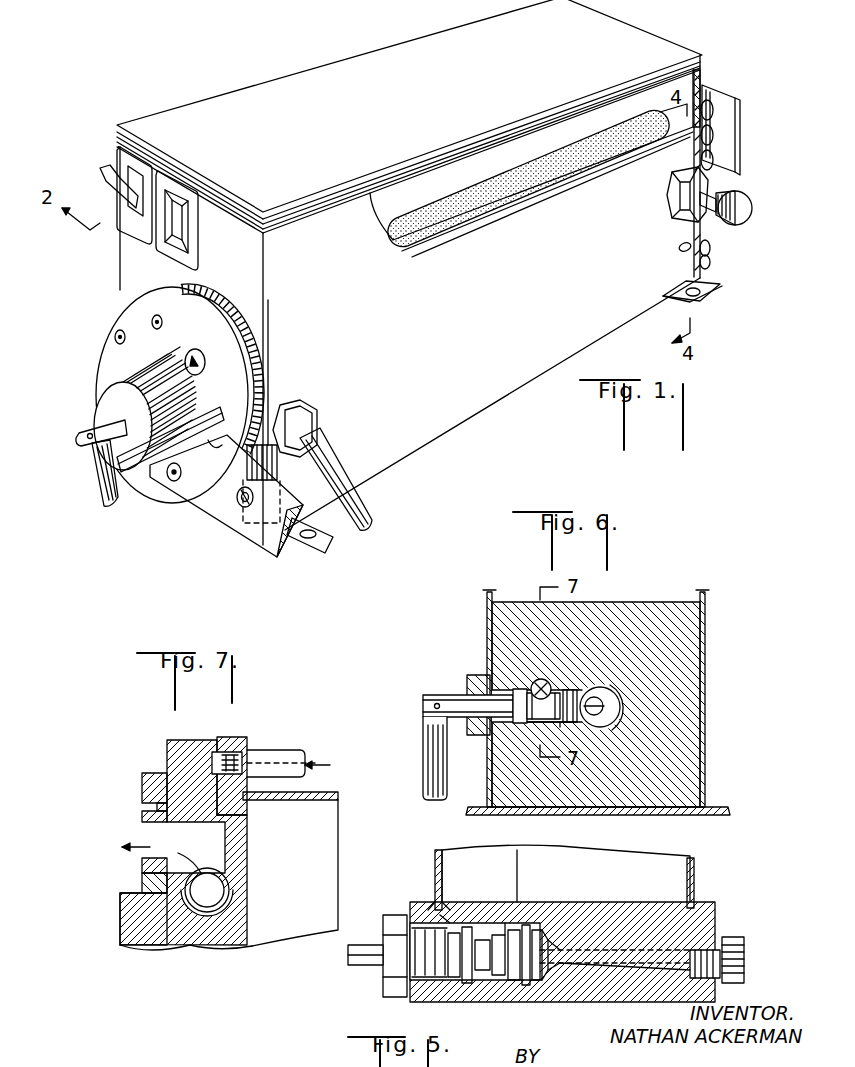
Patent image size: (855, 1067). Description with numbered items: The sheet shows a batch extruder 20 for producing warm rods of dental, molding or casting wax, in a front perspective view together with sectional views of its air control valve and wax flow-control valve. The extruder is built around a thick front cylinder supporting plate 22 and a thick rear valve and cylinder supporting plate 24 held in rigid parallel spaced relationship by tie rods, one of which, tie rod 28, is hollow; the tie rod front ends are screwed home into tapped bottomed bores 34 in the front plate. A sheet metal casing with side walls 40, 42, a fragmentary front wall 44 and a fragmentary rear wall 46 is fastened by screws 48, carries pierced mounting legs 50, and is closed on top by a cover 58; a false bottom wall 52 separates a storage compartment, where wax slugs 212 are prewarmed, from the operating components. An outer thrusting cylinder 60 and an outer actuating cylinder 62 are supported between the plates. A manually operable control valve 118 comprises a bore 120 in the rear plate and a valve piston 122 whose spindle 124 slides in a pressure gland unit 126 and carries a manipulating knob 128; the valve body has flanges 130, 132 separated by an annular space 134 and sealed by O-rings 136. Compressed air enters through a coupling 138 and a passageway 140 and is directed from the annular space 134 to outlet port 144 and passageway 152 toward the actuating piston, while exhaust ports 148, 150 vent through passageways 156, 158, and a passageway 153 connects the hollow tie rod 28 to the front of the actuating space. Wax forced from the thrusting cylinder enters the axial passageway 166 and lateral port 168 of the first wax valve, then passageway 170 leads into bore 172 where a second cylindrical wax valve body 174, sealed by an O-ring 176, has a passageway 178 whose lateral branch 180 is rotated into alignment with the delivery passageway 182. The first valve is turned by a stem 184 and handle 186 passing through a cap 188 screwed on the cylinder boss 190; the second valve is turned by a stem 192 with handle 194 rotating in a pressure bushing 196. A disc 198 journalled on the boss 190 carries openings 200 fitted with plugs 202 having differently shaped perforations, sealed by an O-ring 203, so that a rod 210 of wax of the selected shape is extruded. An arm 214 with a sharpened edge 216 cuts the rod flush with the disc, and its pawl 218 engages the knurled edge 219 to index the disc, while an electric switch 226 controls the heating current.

In FIG. 1, the batch extruder 20 is at (214, 68).
In FIG. 6, the front cylinder supporting plate 22 is at (655, 602).
In FIG. 7, the front cylinder supporting plate 22 is at (196, 948).
In FIG. 5, the rear valve and cylinder supporting plate 24 is at (712, 900).
In FIG. 7, the tie rod 28 is at (290, 748).
In FIG. 7, the tapped bottomed bore 34 is at (232, 742).
In FIG. 1, the side wall 40 is at (452, 421).
In FIG. 6, the side wall 40 is at (487, 619).
In FIG. 6, the side wall 42 is at (706, 646).
In FIG. 1, the fragmentary front wall 44 is at (263, 302).
In FIG. 1, the fragmentary rear wall 46 is at (708, 80).
In FIG. 1, the screws 48 is at (680, 250).
In FIG. 1, the mounting legs 50 is at (305, 546).
In FIG. 1, the false bottom wall 52 is at (508, 152).
In FIG. 1, the sheet metal cover 58 is at (402, 50).
In FIG. 5, the outer thrusting cylinder 60 is at (615, 866).
In FIG. 7, the outer actuating cylinder 62 is at (283, 800).
In FIG. 5, the outer actuating cylinder 62 is at (434, 863).
In FIG. 1, the control valve 118 is at (666, 204).
In FIG. 5, the control valve 118 is at (365, 966).
In FIG. 5, the bore 120 is at (500, 985).
In FIG. 5, the valve piston 122 is at (492, 925).
In FIG. 1, the spindle 124 is at (735, 188).
In FIG. 5, the spindle 124 is at (438, 985).
In FIG. 1, the pressure gland unit 126 is at (670, 191).
In FIG. 5, the pressure gland unit 126 is at (395, 913).
In FIG. 1, the manipulating knob 128 is at (738, 228).
In FIG. 5, the flange 130 is at (480, 985).
In FIG. 5, the flange 132 is at (536, 985).
In FIG. 5, the annular space 134 is at (545, 938).
In FIG. 5, the sealing O-ring 136 is at (528, 985).
In FIG. 5, the coupling 138 is at (740, 936).
In FIG. 5, the passageway 140 is at (646, 1002).
In FIG. 5, the outlet port 144 is at (508, 922).
In FIG. 5, the exhaust port 148 is at (580, 940).
In FIG. 5, the exhaust port 150 is at (452, 920).
In FIG. 5, the passageway 152 is at (548, 925).
In FIG. 7, the passageway 153 is at (218, 768).
In FIG. 5, the passageway 156 is at (560, 985).
In FIG. 5, the passageway 158 is at (462, 985).
In FIG. 6, the passageway 166 is at (612, 690).
In FIG. 6, the port 168 is at (588, 728).
In FIG. 6, the passageway 170 is at (590, 690).
In FIG. 6, the bore 172 is at (552, 723).
In FIG. 6, the second cylindrical wax valve body 174 is at (533, 723).
In FIG. 7, the second cylindrical wax valve body 174 is at (233, 901).
In FIG. 6, the O-ring 176 is at (535, 692).
In FIG. 6, the passageway 178 is at (572, 690).
In FIG. 7, the passageway 178 is at (222, 905).
In FIG. 6, the lateral branch 180 is at (543, 680).
In FIG. 7, the lateral branch 180 is at (225, 885).
In FIG. 7, the delivery passageway 182 is at (248, 850).
In FIG. 1, the stem 184 is at (98, 428).
In FIG. 1, the handle 186 is at (110, 500).
In FIG. 1, the cap 188 is at (100, 383).
In FIG. 7, the cylinder boss 190 is at (133, 946).
In FIG. 1, the stem 192 is at (316, 443).
In FIG. 6, the stem 192 is at (450, 695).
In FIG. 1, the handle 194 is at (368, 504).
In FIG. 6, the handle 194 is at (430, 789).
In FIG. 6, the pressure bushing 196 is at (478, 675).
In FIG. 1, the disc 198 is at (110, 318).
In FIG. 7, the disc 198 is at (142, 780).
In FIG. 7, the openings 200 is at (142, 817).
In FIG. 1, the plug 202 is at (193, 360).
In FIG. 7, the plug 202 is at (142, 860).
In FIG. 7, the O-ring 203 is at (157, 806).
In FIG. 1, the rod of wax 210 is at (130, 465).
In FIG. 1, the wax slug 212 is at (590, 155).
In FIG. 1, the arm 214 is at (230, 483).
In FIG. 7, the arm 214 is at (121, 906).
In FIG. 1, the edge 216 is at (214, 444).
In FIG. 7, the edge 216 is at (142, 880).
In FIG. 1, the pawl 218 is at (278, 476).
In FIG. 1, the knurled edge 219 is at (205, 320).
In FIG. 1, the electric switch 226 is at (106, 170).